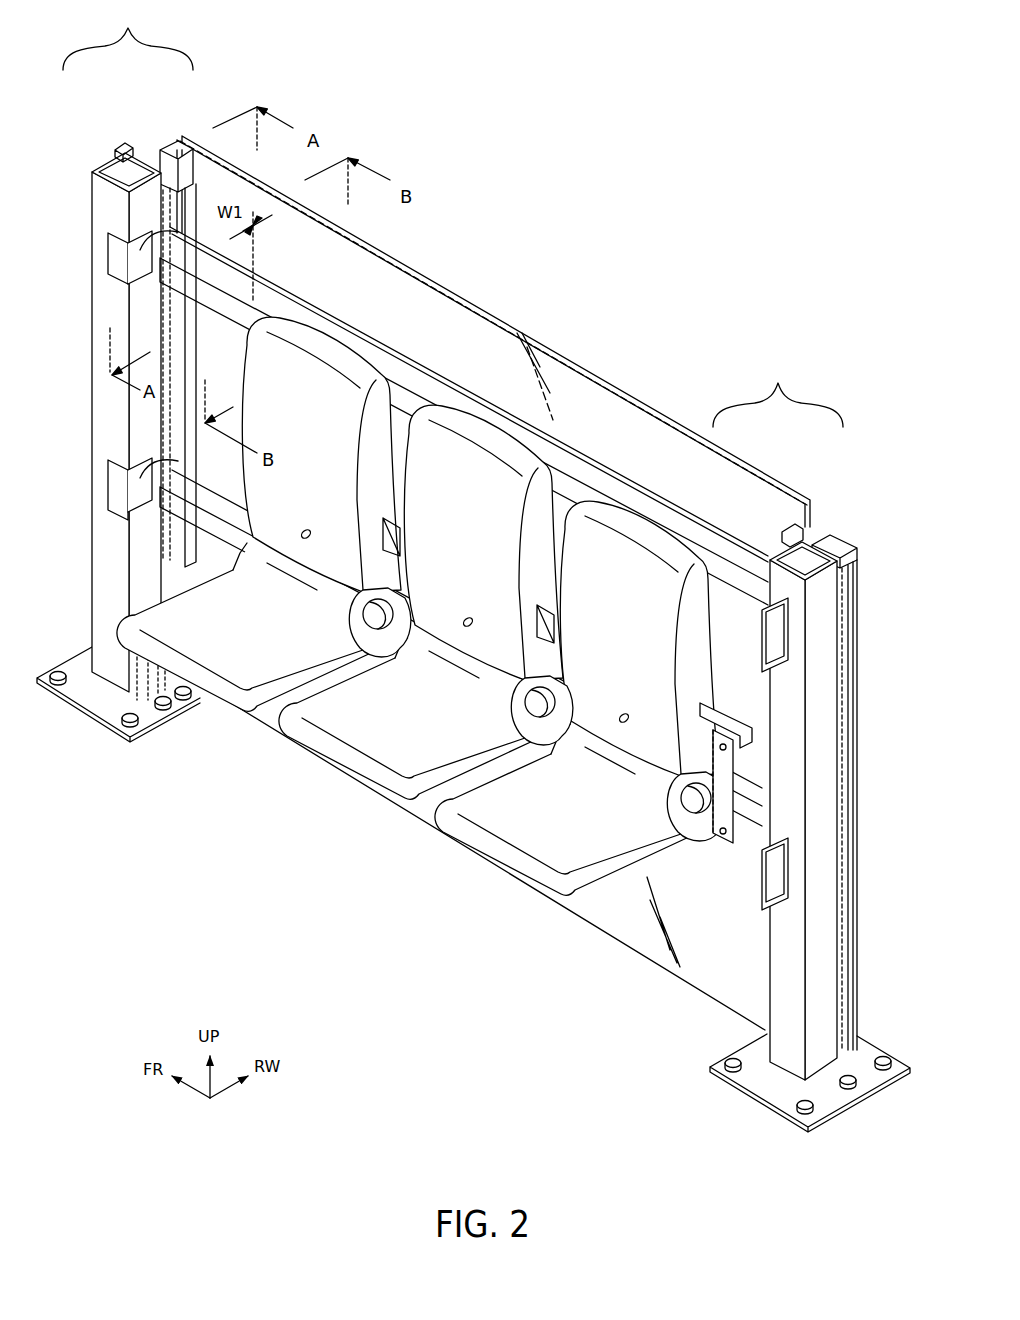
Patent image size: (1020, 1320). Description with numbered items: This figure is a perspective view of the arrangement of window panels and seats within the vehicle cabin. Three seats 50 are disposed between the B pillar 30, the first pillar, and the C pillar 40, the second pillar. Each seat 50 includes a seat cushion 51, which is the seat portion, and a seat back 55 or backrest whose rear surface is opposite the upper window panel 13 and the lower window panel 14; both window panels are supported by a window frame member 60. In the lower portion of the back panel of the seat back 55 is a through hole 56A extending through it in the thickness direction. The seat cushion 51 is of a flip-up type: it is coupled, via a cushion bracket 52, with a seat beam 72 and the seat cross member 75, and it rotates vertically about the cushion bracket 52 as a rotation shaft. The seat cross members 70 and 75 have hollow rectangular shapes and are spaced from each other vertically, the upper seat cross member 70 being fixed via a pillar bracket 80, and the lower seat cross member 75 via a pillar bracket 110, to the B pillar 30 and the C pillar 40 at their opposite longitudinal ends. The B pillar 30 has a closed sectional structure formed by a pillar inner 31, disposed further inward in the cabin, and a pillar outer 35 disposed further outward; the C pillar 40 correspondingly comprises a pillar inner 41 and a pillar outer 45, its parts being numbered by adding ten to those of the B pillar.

The upper window panel 13 is at (482, 335).
The lower window panel 14 is at (705, 975).
The B pillar 30 is at (129, 347).
The pillar inner 31 is at (107, 165).
The pillar outer 35 is at (160, 150).
The C pillar 40 is at (785, 716).
The pillar inner 41 is at (770, 557).
The pillar outer 45 is at (838, 535).
The seat 50 is at (423, 626).
The seat cushion 51 is at (222, 678).
The cushion bracket 52 is at (352, 626).
The seat back 55 is at (343, 362).
The through hole 56A is at (304, 530).
The window frame member 60 is at (464, 526).
The seat cross member 70 is at (224, 324).
The seat beam 72 is at (727, 720).
The seat cross member 75 is at (210, 510).
The pillar bracket 80 is at (108, 258).
The pillar bracket 110 is at (110, 490).